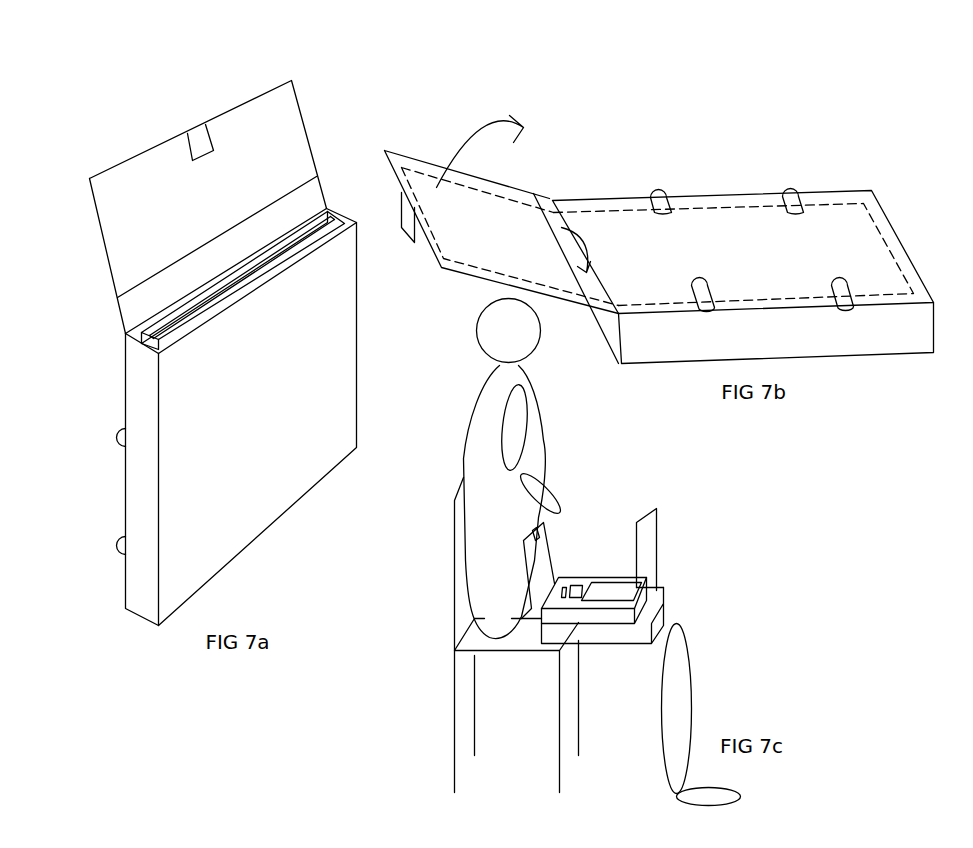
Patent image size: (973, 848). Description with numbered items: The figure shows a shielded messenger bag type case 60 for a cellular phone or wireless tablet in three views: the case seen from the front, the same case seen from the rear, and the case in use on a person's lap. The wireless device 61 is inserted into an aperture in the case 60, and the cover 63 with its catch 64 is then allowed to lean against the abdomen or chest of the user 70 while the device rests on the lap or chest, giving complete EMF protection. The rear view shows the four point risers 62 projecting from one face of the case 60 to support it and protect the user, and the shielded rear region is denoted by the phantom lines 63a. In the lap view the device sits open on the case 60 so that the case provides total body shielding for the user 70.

In FIG. 7A, the shielded messenger bag type case 60 is at (268, 512).
In FIG. 7B, the shielded messenger bag type case 60 is at (870, 370).
In FIG. 7C, the shielded messenger bag type case 60 is at (638, 633).
In FIG. 7A, the wireless device 61 is at (288, 252).
In FIG. 7C, the wireless device 61 is at (608, 569).
In FIG. 7A, the 4-point risers 62 is at (115, 432).
In FIG. 7B, the 4-point risers 62 is at (660, 243).
In FIG. 7A, the cover 63 is at (277, 118).
In FIG. 7B, the cover 63 is at (493, 253).
In FIG. 7C, the cover 63 is at (538, 562).
In FIG. 7B, the phantom lines 63a is at (727, 207).
In FIG. 7A, the catch 64 is at (193, 135).
In FIG. 7B, the catch 64 is at (407, 225).
In FIG. 7C, the user 70 is at (475, 468).